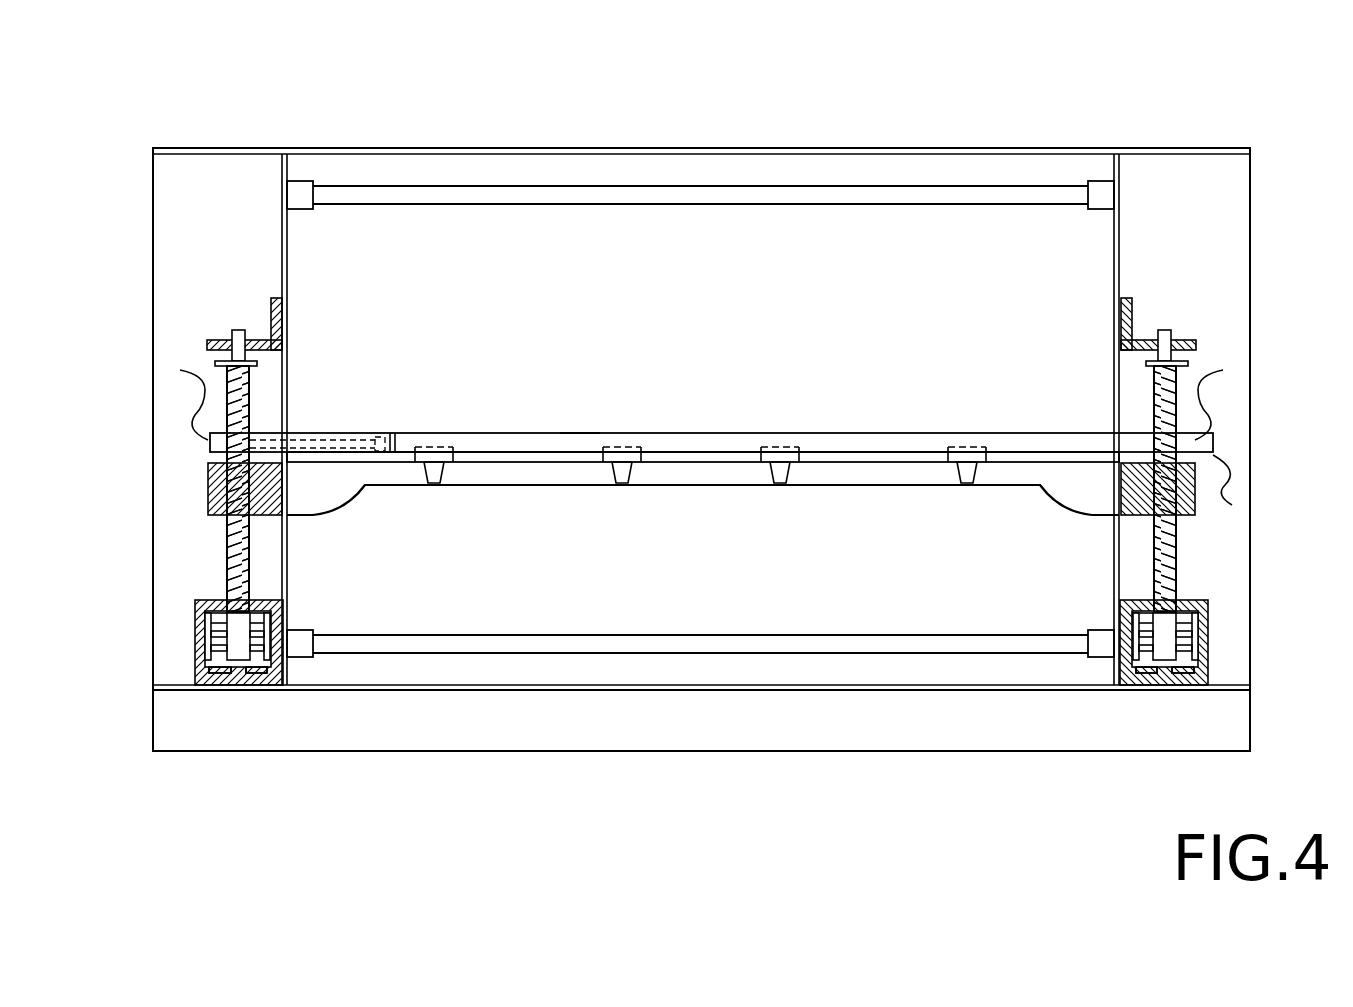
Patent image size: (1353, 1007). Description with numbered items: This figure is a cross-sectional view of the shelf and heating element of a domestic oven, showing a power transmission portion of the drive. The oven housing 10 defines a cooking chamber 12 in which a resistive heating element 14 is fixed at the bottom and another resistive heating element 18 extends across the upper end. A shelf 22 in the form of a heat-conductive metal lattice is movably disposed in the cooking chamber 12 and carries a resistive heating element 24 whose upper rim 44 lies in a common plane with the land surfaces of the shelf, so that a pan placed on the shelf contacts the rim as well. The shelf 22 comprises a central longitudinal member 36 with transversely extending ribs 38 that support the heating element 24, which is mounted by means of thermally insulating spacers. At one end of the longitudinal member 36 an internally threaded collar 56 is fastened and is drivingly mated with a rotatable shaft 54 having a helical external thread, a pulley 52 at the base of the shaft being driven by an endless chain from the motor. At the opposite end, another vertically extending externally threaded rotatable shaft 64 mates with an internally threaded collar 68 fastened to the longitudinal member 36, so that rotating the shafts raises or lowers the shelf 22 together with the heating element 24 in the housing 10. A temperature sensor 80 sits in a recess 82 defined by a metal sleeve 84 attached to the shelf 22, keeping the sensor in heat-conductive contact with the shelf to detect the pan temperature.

The housing 10 is at (443, 148).
The cooking chamber 12 is at (511, 293).
The resistive-type heating element 14 is at (712, 632).
The resistive heating element 18 is at (712, 183).
The shelf 22 is at (558, 512).
The heating element 24 is at (577, 410).
The central longitudinal member 36 is at (927, 472).
The transversely extending ribs 38 is at (787, 472).
The upper rim 44 is at (842, 435).
The pulley 52 is at (1208, 622).
The rotatable shaft 54 is at (1177, 547).
The internally threaded collar 56 is at (1197, 511).
The rotatable shaft 64 is at (227, 552).
The internally threaded collar 68 is at (210, 478).
The temperature sensor 80 is at (297, 432).
The recess 82 is at (347, 428).
The metal sleeve 84 is at (381, 437).